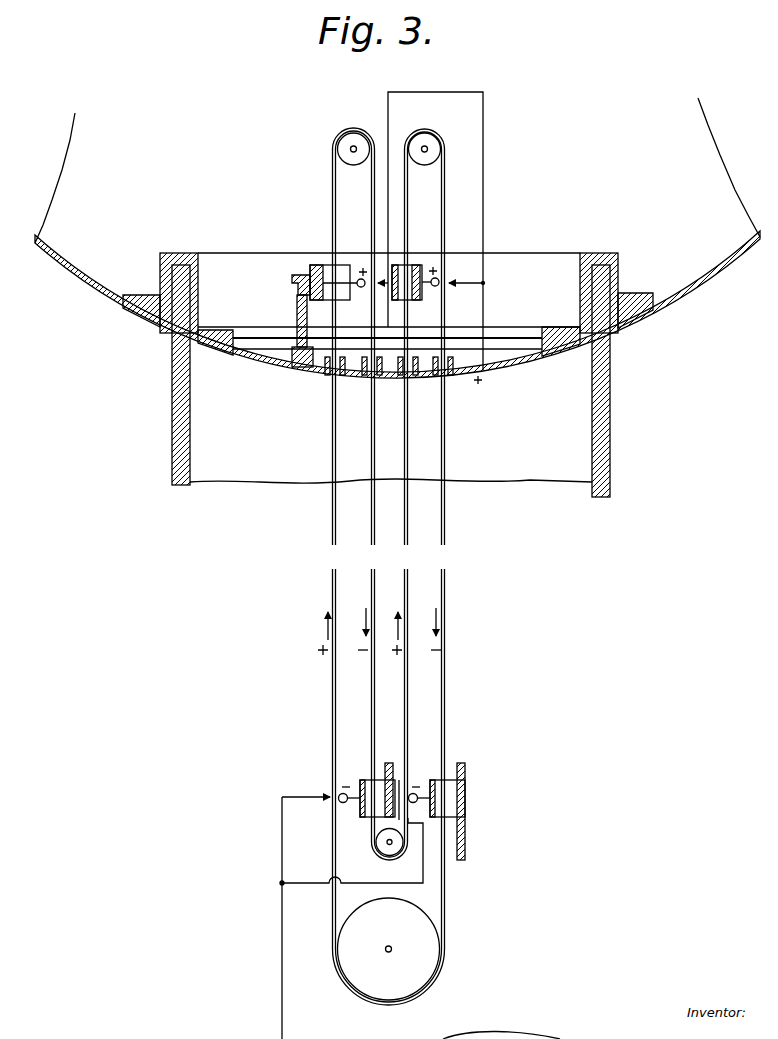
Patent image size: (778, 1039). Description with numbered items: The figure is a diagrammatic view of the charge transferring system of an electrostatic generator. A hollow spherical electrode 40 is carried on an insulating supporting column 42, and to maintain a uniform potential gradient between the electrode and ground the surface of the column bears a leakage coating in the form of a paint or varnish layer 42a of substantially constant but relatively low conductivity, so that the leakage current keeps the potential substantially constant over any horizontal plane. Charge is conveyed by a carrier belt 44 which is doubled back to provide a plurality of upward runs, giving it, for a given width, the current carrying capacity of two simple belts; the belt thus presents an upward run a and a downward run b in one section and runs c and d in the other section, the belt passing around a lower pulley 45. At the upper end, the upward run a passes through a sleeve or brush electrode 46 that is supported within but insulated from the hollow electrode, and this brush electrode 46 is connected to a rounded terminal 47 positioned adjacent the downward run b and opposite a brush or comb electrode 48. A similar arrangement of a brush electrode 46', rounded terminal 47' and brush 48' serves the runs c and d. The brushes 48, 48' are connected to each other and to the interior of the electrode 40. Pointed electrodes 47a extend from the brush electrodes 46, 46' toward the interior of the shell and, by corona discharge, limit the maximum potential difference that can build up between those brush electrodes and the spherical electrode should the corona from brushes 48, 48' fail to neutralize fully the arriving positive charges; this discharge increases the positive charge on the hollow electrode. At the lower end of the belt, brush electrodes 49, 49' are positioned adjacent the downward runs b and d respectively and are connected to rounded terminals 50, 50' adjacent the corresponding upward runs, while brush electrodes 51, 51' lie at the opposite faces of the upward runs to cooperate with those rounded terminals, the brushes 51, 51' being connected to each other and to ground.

The hollow spherical electrode 40 is at (133, 292).
The supporting column 42 is at (611, 428).
The paint or varnish layer 42a is at (172, 422).
The carrier belt 44 is at (332, 710).
The pulley 45 is at (418, 976).
The sleeve or brush electrode 46 is at (285, 263).
The brush electrode 46' is at (463, 261).
The rounded terminal 47 is at (317, 245).
The rounded terminal 47' is at (479, 275).
The pointed electrode 47a is at (292, 282).
The brush or comb electrode 48 is at (307, 304).
The brush electrode 48' is at (493, 300).
The brush electrode 49 is at (371, 822).
The brush electrode 49' is at (480, 811).
The rounded terminal 50 is at (324, 781).
The rounded terminal 50' is at (465, 824).
The brush electrode 51 is at (351, 918).
The brush electrode 51' is at (446, 777).
The upward run a is at (336, 450).
The downward run b is at (375, 450).
The upward run c is at (408, 450).
The downward run d is at (445, 450).